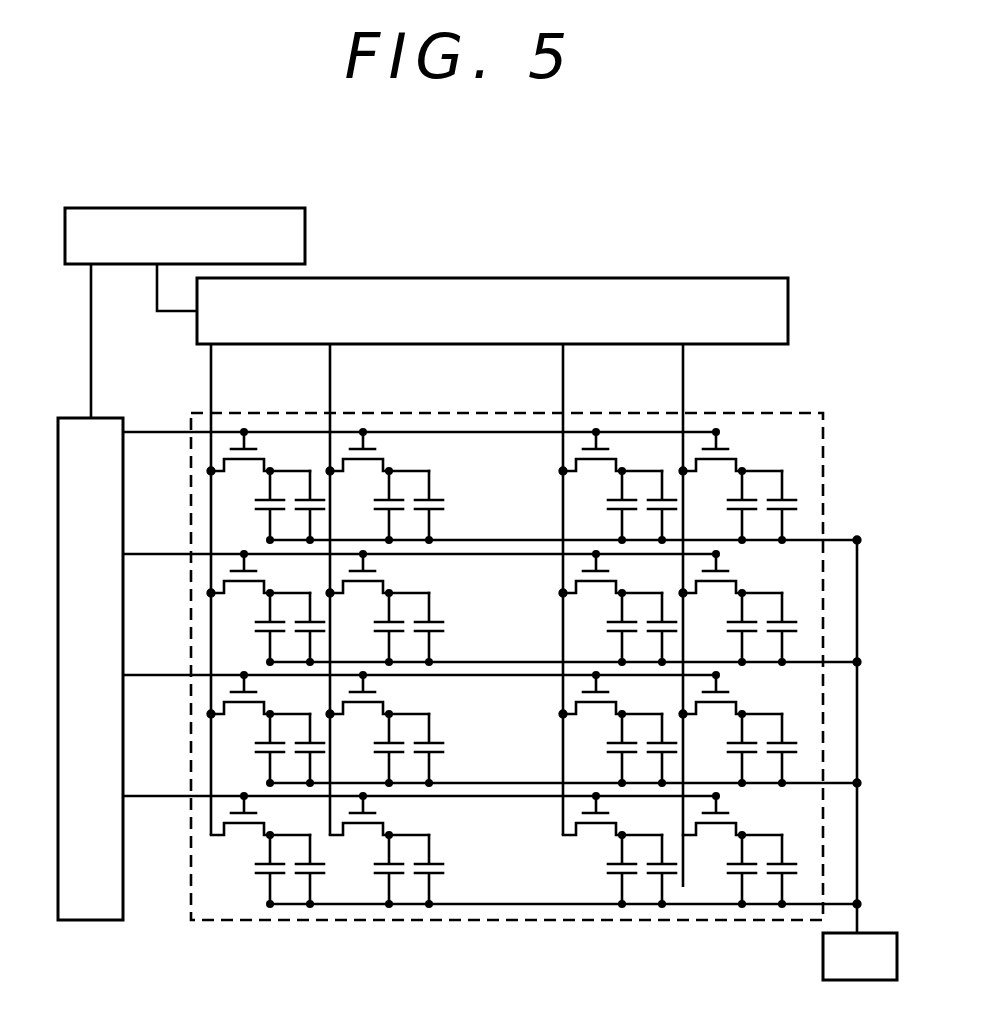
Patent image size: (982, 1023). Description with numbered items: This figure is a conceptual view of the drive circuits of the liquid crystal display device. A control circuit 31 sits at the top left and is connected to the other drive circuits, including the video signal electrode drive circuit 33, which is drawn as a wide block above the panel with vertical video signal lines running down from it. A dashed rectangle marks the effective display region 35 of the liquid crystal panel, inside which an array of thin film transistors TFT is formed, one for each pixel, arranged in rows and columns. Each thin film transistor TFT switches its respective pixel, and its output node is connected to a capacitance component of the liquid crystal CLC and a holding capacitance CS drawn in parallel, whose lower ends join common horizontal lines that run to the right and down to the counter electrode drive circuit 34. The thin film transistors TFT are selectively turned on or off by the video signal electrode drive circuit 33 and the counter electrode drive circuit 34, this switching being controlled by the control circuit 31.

The control circuit 31 is at (185, 236).
The video signal electrode drive circuit 33 is at (492, 311).
The counter electrode drive circuit 34 is at (860, 956).
The effective display region 35 is at (463, 921).
The thin film transistor TFT is at (393, 451).
The capacitance component of the liquid crystal CLC is at (398, 620).
The holding capacitance CS is at (447, 625).